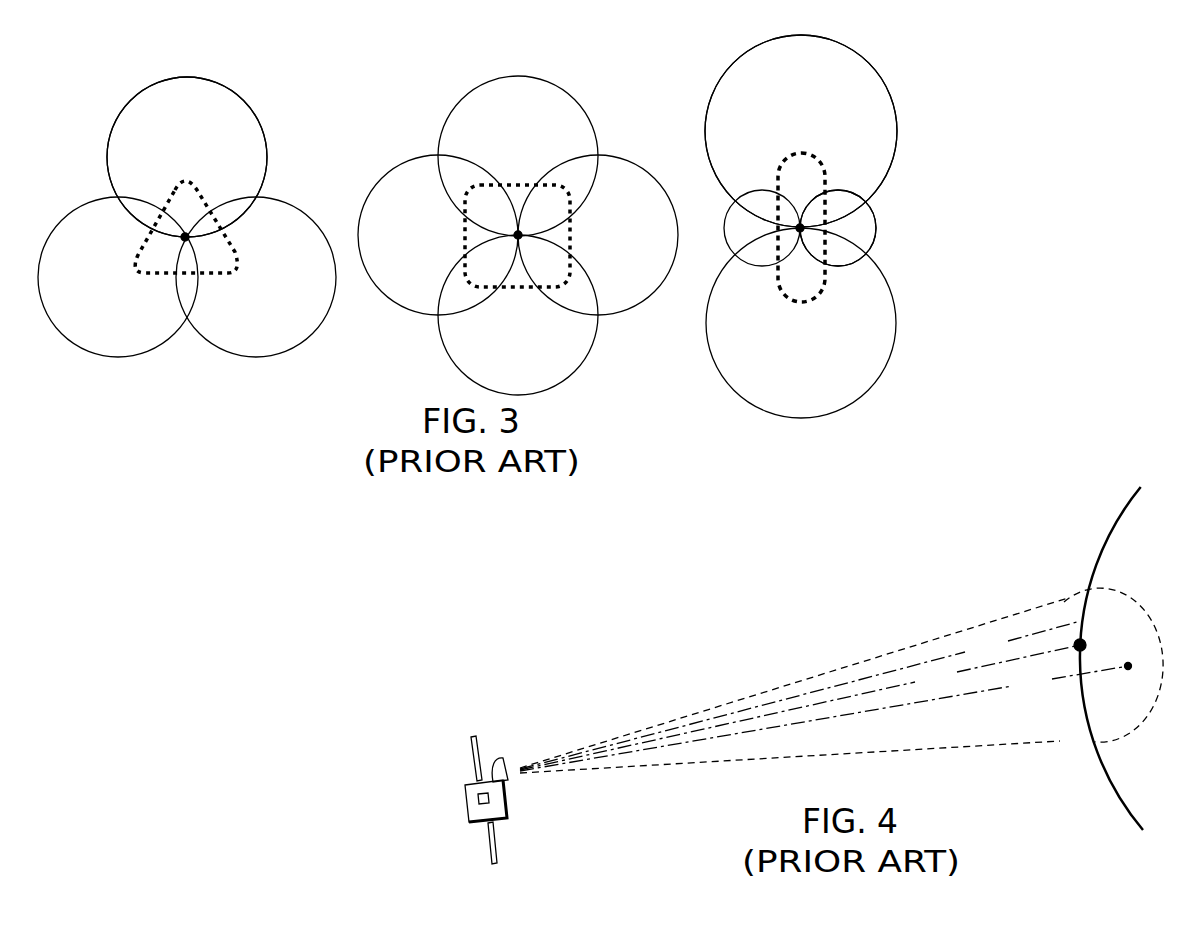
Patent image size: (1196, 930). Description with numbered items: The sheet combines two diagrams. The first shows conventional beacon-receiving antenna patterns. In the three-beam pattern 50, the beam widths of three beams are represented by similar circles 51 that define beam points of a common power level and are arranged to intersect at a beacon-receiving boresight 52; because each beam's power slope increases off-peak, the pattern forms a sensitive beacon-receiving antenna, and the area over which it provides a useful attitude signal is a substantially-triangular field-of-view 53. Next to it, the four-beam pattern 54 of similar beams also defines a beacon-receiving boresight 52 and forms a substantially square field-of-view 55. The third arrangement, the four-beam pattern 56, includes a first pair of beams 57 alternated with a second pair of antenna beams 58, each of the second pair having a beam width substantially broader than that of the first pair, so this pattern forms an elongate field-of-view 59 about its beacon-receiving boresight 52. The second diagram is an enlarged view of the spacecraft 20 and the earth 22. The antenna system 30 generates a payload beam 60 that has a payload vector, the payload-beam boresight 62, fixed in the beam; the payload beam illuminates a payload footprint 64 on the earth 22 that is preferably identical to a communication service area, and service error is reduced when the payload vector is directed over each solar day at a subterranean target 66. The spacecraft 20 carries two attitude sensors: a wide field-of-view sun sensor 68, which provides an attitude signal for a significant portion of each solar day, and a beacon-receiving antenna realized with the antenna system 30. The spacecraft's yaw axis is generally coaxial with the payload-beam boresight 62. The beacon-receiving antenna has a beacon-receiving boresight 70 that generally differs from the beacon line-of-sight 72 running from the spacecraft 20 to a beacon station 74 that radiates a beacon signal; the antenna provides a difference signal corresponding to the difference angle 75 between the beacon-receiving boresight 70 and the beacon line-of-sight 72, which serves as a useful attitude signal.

In FIG. 3, the three-beam pattern 50 is at (103, 108).
In FIG. 3, the circles 51 is at (108, 137).
In FIG. 3, the beacon-receiving boresight 52 is at (184, 238).
In FIG. 3, the substantially-triangular field-of-view 53 is at (175, 187).
In FIG. 3, the four-beam pattern 54 is at (421, 126).
In FIG. 3, the substantially square field-of-view 55 is at (517, 185).
In FIG. 3, the four-beam pattern 56 is at (708, 90).
In FIG. 3, the first pair of beams 57 is at (877, 222).
In FIG. 3, the second pair of antenna beams 58 is at (897, 112).
In FIG. 3, the elongate field-of-view 59 is at (800, 155).
In FIG. 4, the spacecraft 20 is at (510, 795).
In FIG. 4, the antenna system 30 is at (507, 763).
In FIG. 4, the sun sensor 68 is at (475, 800).
In FIG. 4, the earth 22 is at (1108, 781).
In FIG. 4, the payload beam 60 is at (968, 752).
In FIG. 4, the payload-beam boresight 62 is at (824, 718).
In FIG. 4, the payload footprint 64 is at (1122, 592).
In FIG. 4, the subterranean target 66 is at (1129, 661).
In FIG. 4, the beacon-receiving boresight 70 is at (798, 695).
In FIG. 4, the beacon line-of-sight 72 is at (800, 707).
In FIG. 4, the beacon station 74 is at (1077, 643).
In FIG. 4, the difference angle 75 is at (870, 728).